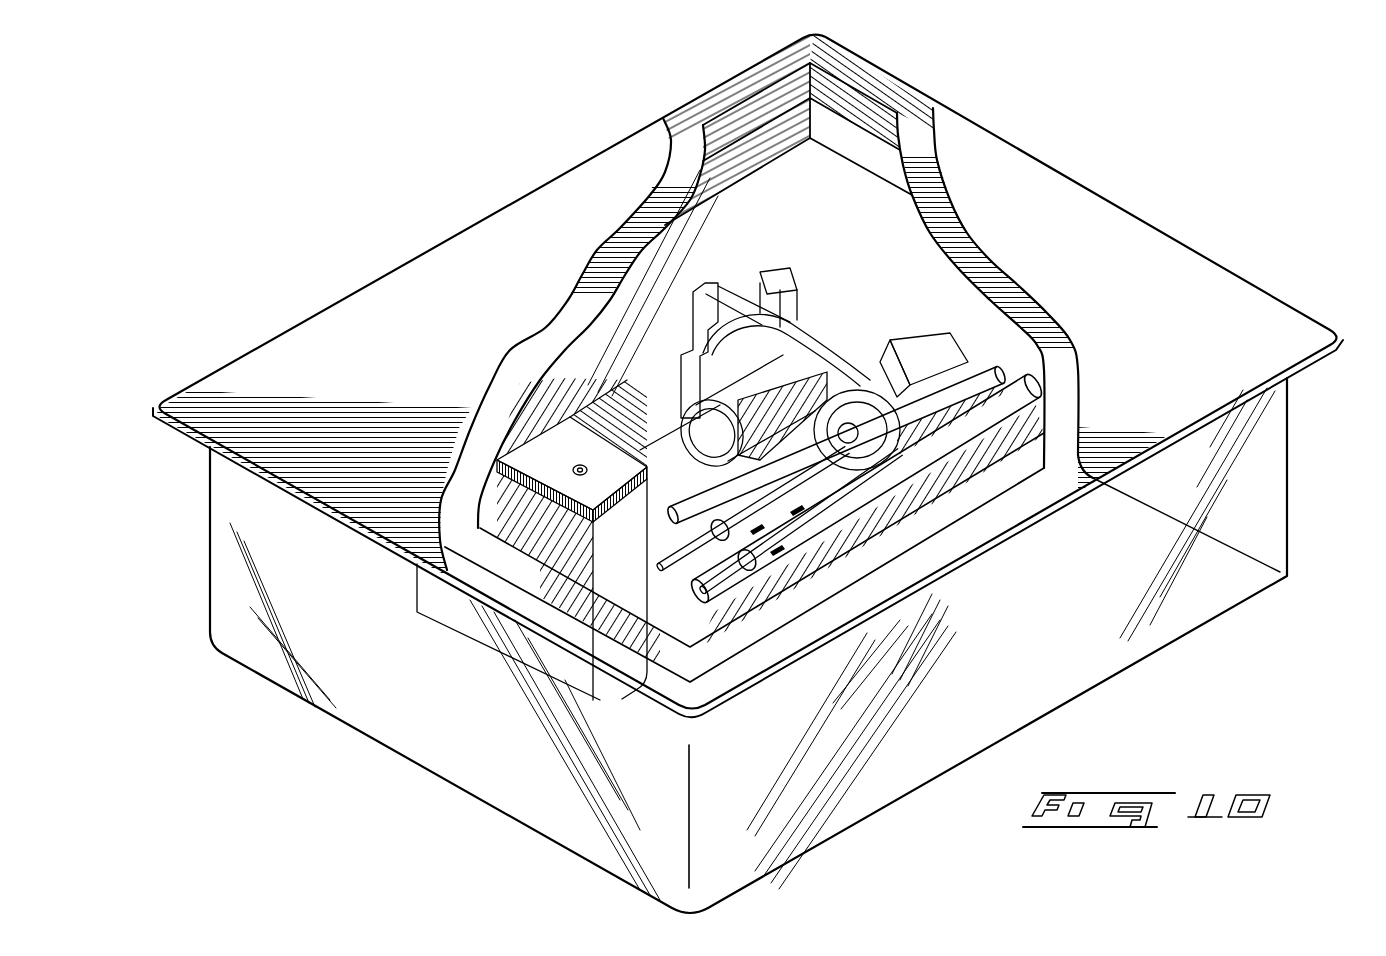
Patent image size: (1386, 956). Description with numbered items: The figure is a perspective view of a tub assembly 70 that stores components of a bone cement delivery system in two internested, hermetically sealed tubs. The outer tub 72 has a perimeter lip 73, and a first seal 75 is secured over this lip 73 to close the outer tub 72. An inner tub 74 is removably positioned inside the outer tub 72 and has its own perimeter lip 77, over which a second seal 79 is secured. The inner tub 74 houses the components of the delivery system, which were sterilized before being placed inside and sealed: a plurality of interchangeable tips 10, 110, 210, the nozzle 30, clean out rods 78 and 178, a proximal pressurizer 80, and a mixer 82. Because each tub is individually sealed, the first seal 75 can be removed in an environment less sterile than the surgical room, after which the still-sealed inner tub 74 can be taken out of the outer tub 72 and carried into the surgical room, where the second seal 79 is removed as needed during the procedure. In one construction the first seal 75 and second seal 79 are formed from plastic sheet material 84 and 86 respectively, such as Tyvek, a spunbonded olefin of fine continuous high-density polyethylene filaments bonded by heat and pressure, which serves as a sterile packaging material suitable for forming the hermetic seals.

The tip 10 is at (717, 456).
The nozzle 30 is at (851, 372).
The tub assembly 70 is at (356, 228).
The outer tub 72 is at (875, 765).
The perimeter lip 73 is at (1302, 332).
The inner tub 74 is at (855, 150).
The first seal 75 is at (725, 677).
The perimeter lip 77 is at (732, 111).
The clean out rod 78 is at (664, 542).
The second seal 79 is at (862, 108).
The proximal pressurizer 80 is at (945, 324).
The mixer 82 is at (753, 272).
The plastic sheet material 84 is at (1092, 272).
The plastic sheet material 86 is at (915, 150).
The tip 110 is at (1014, 376).
The clean out rod 178 is at (660, 610).
The tip 210 is at (1048, 392).